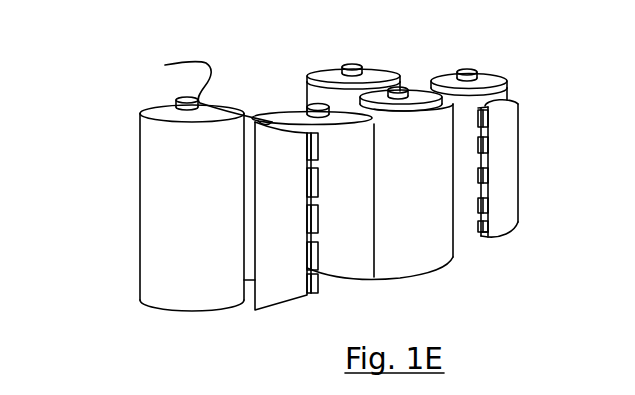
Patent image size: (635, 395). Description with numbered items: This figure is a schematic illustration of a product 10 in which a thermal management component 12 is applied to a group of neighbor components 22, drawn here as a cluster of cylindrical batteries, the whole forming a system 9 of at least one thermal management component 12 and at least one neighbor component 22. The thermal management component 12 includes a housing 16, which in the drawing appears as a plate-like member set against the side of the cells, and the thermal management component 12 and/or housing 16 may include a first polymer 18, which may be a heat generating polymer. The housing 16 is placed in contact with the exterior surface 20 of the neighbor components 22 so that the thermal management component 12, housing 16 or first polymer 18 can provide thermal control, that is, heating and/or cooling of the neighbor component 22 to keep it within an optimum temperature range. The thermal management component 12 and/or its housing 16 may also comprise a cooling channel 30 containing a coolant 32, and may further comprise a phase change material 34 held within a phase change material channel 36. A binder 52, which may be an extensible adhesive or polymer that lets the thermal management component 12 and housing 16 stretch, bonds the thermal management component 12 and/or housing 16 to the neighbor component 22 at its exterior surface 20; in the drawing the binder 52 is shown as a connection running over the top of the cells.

The system 9 is at (115, 92).
The product 10 is at (528, 34).
The thermal management component 12 is at (513, 171).
The housing 16 is at (283, 292).
The first polymer 18 is at (520, 136).
The exterior surface 20 is at (277, 119).
The neighbor component 22 is at (343, 116).
The cooling channel 30 is at (488, 236).
The coolant 32 is at (482, 231).
The phase change material 34 is at (487, 203).
The phase change material channel 36 is at (489, 211).
The binder 52 is at (206, 87).